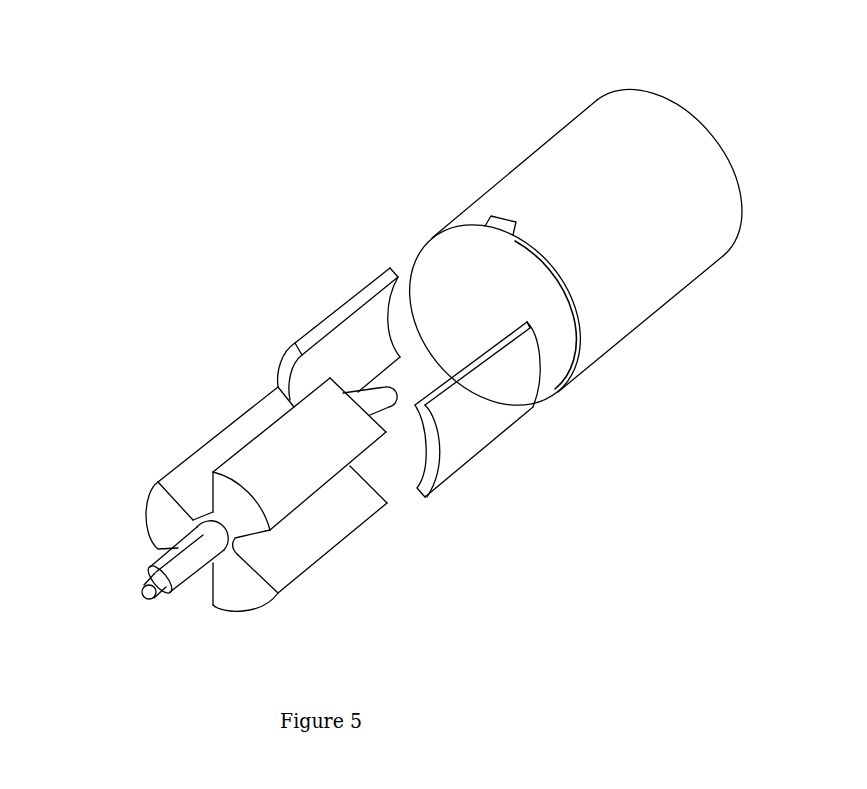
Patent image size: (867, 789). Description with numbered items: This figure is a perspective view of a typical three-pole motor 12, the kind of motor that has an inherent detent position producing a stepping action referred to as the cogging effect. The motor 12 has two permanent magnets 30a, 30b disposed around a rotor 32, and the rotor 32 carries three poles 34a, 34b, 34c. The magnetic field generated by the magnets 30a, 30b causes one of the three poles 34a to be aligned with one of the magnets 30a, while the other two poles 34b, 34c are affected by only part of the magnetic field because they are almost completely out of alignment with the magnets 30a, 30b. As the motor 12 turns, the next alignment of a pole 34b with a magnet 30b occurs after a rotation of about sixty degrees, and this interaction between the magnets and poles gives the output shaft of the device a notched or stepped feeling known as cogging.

The motor 12 is at (716, 64).
The permanent magnet 30a is at (458, 372).
The permanent magnet 30b is at (338, 308).
The rotor 32 is at (247, 547).
The pole 34a is at (247, 470).
The pole 34b is at (233, 597).
The pole 34c is at (163, 513).